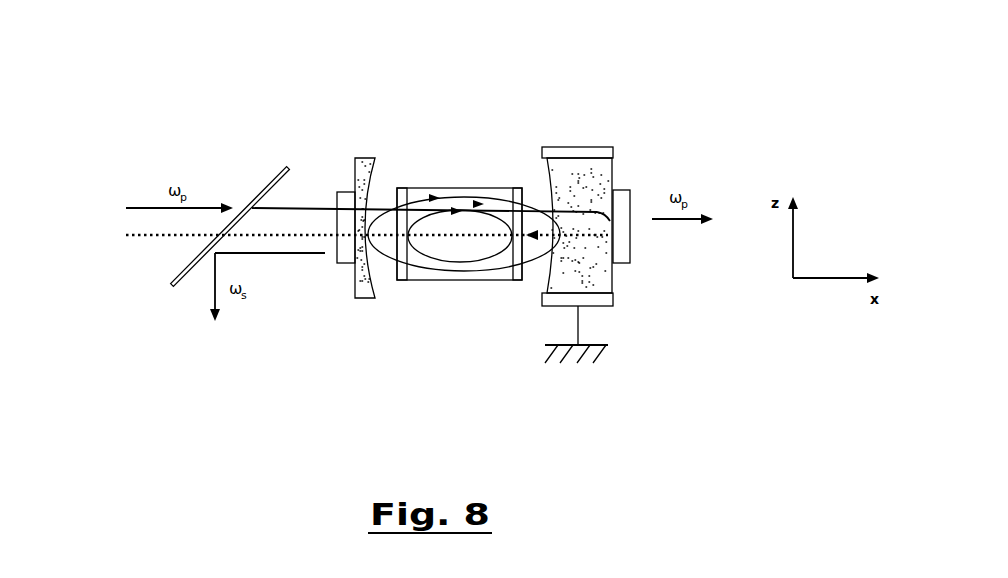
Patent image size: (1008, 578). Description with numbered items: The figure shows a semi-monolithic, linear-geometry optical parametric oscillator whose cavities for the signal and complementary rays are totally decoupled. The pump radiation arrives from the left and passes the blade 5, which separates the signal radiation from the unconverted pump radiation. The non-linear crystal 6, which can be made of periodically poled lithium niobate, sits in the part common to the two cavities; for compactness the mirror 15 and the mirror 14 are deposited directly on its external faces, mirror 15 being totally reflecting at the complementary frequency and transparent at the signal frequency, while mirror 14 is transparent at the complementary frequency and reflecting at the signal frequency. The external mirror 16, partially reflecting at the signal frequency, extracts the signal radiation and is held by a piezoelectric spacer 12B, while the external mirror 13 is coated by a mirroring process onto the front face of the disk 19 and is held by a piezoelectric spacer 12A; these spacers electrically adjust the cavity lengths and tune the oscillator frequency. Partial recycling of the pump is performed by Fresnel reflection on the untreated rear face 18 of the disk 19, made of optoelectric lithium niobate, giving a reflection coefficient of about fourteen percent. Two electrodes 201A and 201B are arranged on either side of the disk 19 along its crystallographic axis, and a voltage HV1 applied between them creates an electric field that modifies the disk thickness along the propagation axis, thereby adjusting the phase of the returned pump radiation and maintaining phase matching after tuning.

The blade 5 is at (282, 167).
The piezoelectric spacer 12B is at (348, 250).
The mirror 16 is at (368, 172).
The mirror 15 is at (400, 203).
The mirror 14 is at (507, 197).
The mirror 13 is at (543, 172).
The crystal 6 is at (478, 275).
The disk 19 is at (582, 170).
The electrode 201A is at (552, 148).
The voltage HV1 is at (580, 145).
The electrode 201B is at (598, 303).
The piezoelectric spacer 12A is at (620, 237).
The rear face 18 is at (613, 177).